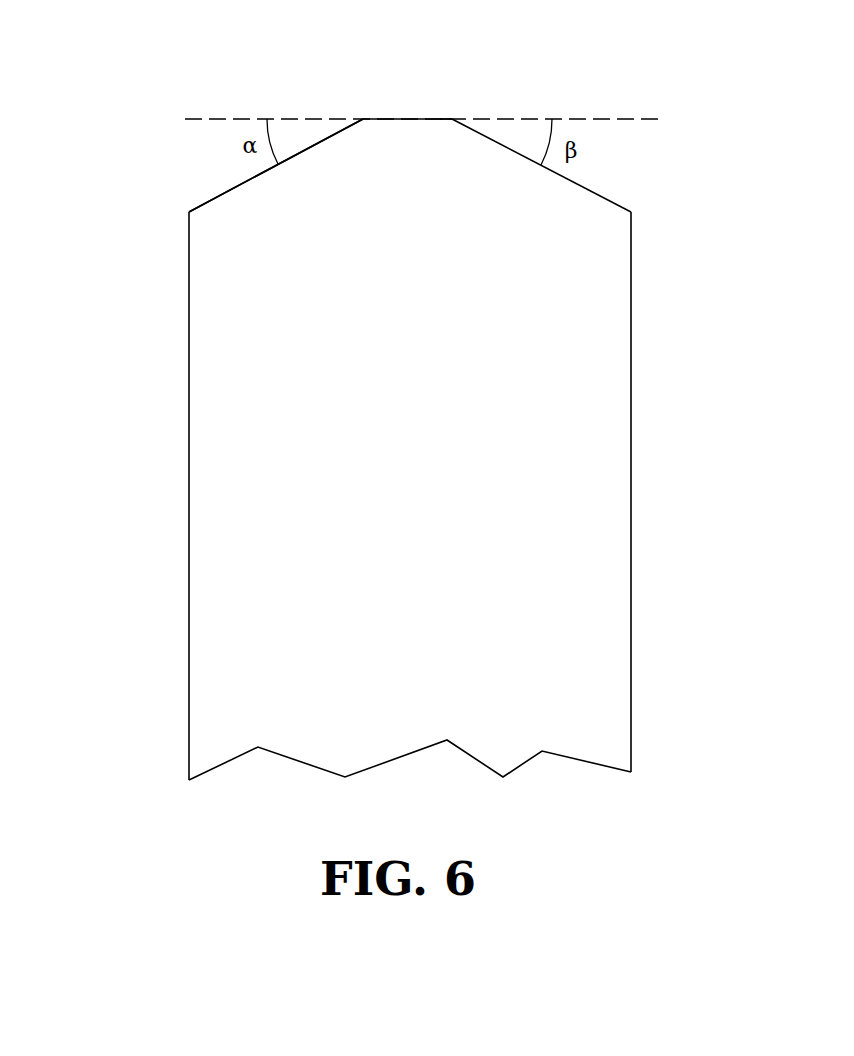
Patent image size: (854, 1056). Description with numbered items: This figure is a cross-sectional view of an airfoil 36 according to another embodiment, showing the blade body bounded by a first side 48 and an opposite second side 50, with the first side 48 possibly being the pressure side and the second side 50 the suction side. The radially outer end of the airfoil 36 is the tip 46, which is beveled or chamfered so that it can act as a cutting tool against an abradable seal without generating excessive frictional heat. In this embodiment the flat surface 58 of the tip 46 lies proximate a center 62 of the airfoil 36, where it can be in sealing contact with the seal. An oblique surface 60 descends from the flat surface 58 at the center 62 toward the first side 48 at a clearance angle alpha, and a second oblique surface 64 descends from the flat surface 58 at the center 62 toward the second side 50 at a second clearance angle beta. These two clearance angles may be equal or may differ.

The airfoil 36 is at (393, 455).
The tip 46 is at (338, 172).
The first side 48 is at (189, 470).
The second side 50 is at (631, 488).
The flat surface 58 is at (400, 108).
The oblique surface 60 is at (205, 193).
The center 62 is at (422, 121).
The second oblique surface 64 is at (597, 187).